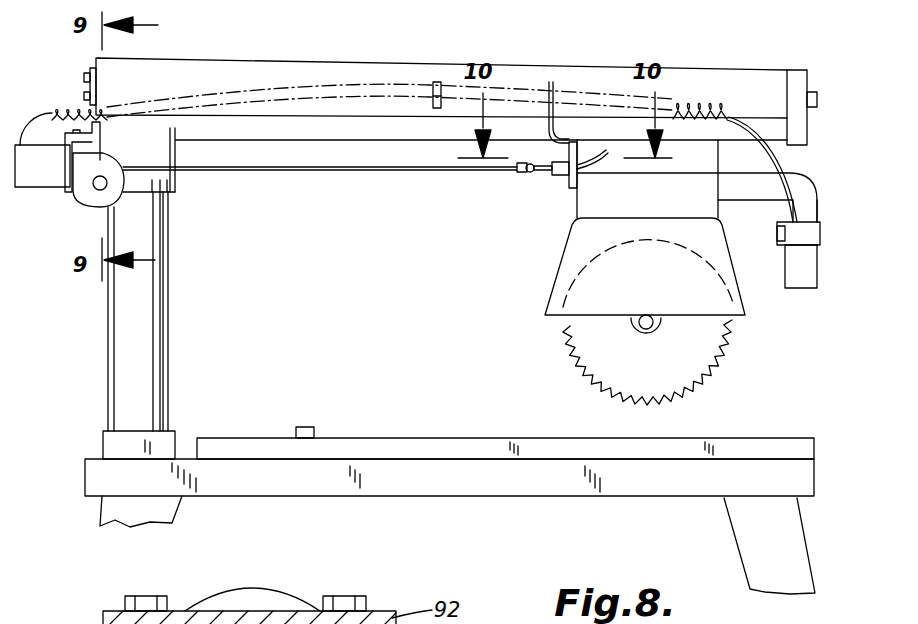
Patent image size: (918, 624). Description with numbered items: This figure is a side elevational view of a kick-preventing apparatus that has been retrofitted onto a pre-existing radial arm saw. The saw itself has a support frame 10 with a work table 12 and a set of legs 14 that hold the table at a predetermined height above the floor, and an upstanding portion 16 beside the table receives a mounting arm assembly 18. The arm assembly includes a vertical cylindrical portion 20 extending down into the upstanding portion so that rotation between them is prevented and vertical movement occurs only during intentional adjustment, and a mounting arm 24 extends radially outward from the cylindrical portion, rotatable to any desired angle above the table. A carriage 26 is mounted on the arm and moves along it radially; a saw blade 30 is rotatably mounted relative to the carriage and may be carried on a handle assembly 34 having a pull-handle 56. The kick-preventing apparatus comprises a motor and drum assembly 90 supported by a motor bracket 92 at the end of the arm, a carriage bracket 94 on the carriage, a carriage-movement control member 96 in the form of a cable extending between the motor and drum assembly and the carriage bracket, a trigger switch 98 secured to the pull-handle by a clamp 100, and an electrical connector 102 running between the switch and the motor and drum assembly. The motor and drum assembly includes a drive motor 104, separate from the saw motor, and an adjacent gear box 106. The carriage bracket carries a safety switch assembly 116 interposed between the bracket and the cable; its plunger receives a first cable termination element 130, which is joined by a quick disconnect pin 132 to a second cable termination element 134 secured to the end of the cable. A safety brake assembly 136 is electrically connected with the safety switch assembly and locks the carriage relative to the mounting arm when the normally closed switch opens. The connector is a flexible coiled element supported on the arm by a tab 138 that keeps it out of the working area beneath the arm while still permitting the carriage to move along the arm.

The support frame 10 is at (436, 502).
The work table 12 is at (424, 444).
The legs 14 is at (173, 516).
The upstanding portion 16 is at (103, 441).
The mounting arm assembly 18 is at (180, 58).
The vertical cylindrical portion 20 is at (163, 325).
The mounting arm 24 is at (355, 64).
The carriage 26 is at (560, 267).
The saw blade 30 is at (729, 342).
The handle assembly 34 is at (814, 172).
The pull-handle 56 is at (818, 265).
The motor and drum assembly 90 is at (68, 200).
The motor bracket 92 is at (84, 88).
The carriage bracket 94 is at (589, 145).
The carriage-movement control member 96 is at (290, 172).
The switch 98 is at (781, 232).
The clamp 100 is at (822, 207).
The electrical connector 102 is at (700, 105).
The drive motor 104 is at (50, 180).
The gear box 106 is at (110, 200).
The safety switch assembly 116 is at (556, 186).
The first cable termination element 130 is at (542, 178).
The quick disconnect pin 132 is at (528, 175).
The second cable termination element 134 is at (517, 171).
The safety brake assembly 136 is at (590, 142).
The tab 138 is at (438, 80).